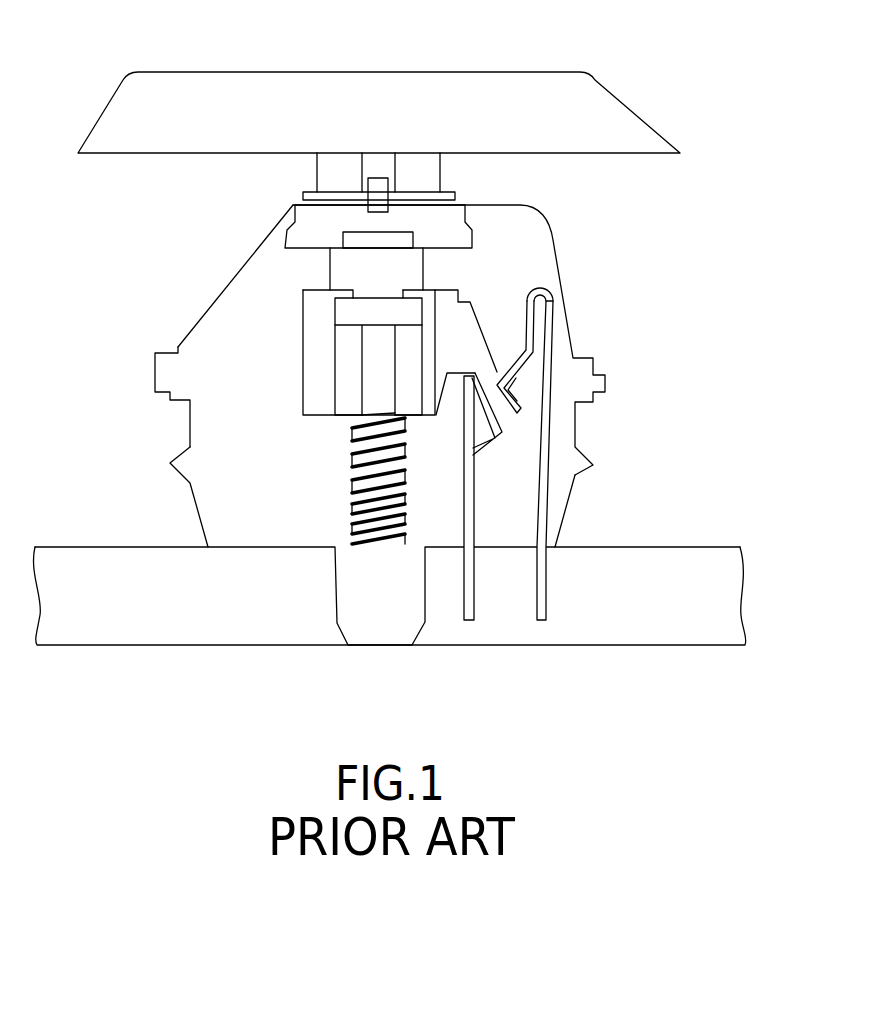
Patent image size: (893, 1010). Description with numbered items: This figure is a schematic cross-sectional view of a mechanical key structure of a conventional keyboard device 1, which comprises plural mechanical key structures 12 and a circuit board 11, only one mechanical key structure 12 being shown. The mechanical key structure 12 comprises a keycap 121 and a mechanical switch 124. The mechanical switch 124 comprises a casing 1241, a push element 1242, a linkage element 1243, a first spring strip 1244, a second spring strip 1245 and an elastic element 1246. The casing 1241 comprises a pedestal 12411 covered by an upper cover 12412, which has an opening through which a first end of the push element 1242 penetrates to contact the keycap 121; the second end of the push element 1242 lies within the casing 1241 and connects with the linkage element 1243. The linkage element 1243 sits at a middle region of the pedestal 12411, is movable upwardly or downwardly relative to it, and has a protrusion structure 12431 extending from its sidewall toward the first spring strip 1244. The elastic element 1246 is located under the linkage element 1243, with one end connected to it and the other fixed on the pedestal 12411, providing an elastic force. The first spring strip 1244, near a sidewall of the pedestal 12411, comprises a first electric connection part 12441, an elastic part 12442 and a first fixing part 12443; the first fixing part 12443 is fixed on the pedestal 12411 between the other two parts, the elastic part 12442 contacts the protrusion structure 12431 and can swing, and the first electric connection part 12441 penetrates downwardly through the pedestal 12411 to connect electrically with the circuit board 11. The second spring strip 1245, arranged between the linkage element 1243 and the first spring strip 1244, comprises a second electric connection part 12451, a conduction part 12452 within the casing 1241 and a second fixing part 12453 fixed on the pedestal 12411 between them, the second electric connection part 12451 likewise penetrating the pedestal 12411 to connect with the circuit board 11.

The keyboard device 1 is at (213, 34).
The circuit board 11 is at (125, 559).
The mechanical key structure 12 is at (687, 99).
The keycap 121 is at (489, 70).
The mechanical switch 124 is at (606, 237).
The casing 1241 is at (177, 344).
The pedestal 12411 is at (210, 520).
The upper cover 12412 is at (240, 290).
The push element 1242 is at (357, 268).
The linkage element 1243 is at (444, 299).
The protrusion structure 12431 is at (489, 386).
The first spring strip 1244 is at (543, 468).
The first electric connection part 12441 is at (543, 606).
The elastic part 12442 is at (508, 372).
The first fixing part 12443 is at (556, 545).
The second spring strip 1245 is at (458, 489).
The second electric connection part 12451 is at (467, 606).
The conduction part 12452 is at (468, 440).
The second fixing part 12453 is at (475, 553).
The elastic element 1246 is at (355, 505).